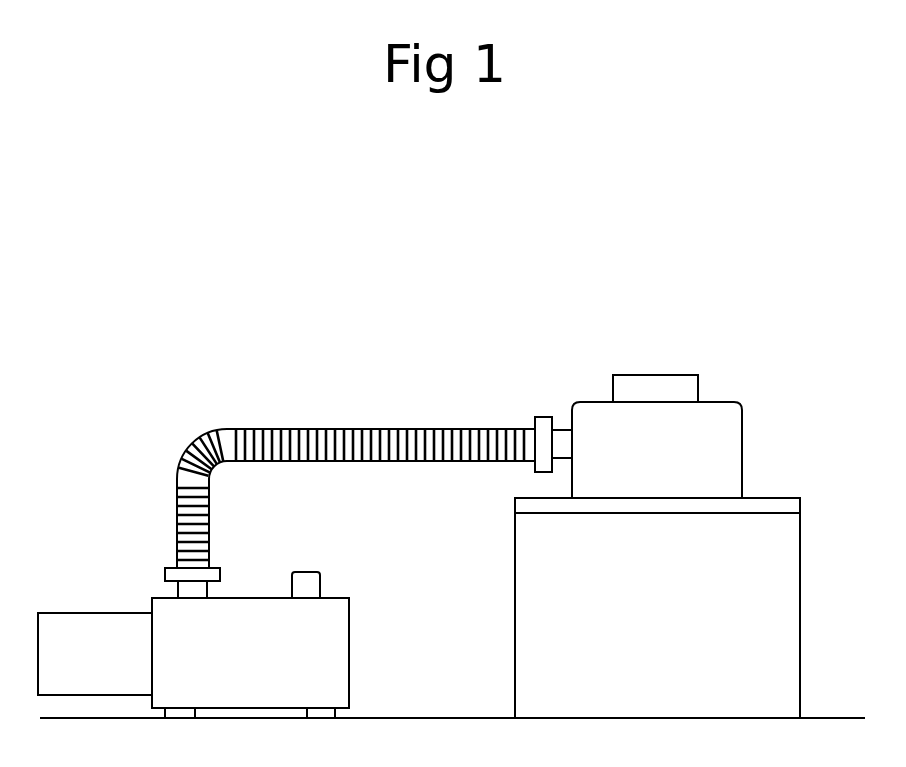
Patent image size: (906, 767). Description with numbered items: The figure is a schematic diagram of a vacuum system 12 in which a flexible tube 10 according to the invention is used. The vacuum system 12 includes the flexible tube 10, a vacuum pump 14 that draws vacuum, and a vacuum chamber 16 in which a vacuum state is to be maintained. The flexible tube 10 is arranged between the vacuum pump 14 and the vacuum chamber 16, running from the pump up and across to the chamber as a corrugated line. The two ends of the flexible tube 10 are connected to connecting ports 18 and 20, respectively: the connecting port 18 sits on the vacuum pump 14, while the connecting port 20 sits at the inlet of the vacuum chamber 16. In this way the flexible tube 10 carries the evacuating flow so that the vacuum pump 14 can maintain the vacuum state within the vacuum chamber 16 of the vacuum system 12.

The flexible tube 10 is at (325, 428).
The vacuum system 12 is at (630, 237).
The vacuum pump 14 is at (350, 641).
The vacuum chamber 16 is at (737, 445).
The connecting port 18 is at (176, 590).
The connecting port 20 is at (560, 428).